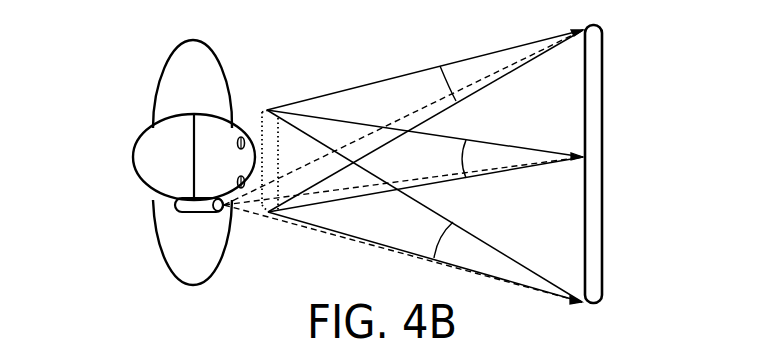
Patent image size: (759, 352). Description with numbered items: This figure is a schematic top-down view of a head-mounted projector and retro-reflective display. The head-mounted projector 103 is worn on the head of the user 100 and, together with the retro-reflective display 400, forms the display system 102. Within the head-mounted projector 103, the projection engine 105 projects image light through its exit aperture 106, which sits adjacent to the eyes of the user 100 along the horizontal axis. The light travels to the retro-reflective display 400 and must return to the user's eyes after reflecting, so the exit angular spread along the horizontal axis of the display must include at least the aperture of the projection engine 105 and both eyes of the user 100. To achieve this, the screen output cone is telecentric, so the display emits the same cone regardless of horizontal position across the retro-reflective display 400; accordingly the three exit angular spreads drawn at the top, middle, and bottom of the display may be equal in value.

The user 100 is at (196, 293).
The display system 102 is at (381, 46).
The head-mounted projector 103 is at (141, 119).
The projection engine 105 is at (168, 205).
The exit aperture 106 is at (221, 211).
The retro-reflective display 400 is at (603, 173).